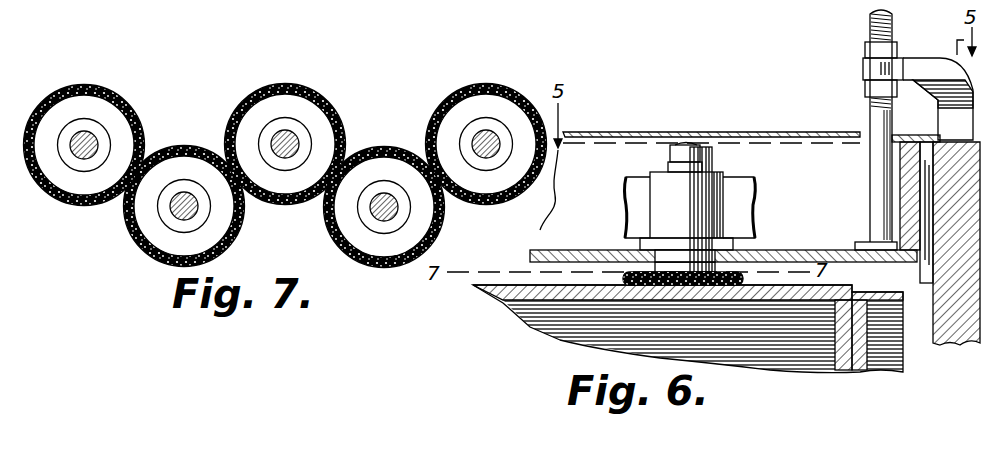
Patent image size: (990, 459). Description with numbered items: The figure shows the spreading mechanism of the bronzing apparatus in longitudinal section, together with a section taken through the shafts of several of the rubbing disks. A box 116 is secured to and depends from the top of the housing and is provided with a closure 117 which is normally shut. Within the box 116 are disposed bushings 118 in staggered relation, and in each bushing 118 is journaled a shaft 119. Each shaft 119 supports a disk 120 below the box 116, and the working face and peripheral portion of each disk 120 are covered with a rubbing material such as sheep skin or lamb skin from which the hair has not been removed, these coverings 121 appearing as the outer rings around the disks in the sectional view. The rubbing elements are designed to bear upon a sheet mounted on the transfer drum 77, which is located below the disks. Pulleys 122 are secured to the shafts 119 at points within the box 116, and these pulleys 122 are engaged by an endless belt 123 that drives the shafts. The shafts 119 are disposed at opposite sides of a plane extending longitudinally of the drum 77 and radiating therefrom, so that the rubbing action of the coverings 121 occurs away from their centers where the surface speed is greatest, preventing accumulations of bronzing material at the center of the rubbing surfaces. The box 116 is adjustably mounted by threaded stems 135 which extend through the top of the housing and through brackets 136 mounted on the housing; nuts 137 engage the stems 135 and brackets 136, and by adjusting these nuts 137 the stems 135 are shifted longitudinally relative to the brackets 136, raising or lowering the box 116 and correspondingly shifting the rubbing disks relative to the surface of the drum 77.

In FIG. 6, the transfer drum 77 is at (521, 322).
In FIG. 6, the box 116 is at (568, 249).
In FIG. 6, the closure 117 is at (628, 133).
In FIG. 6, the bushing 118 is at (728, 234).
In FIG. 7, the shaft 119 is at (184, 195).
In FIG. 6, the shaft 119 is at (693, 144).
In FIG. 7, the disk 120 is at (142, 222).
In FIG. 7, the covering 121 is at (93, 88).
In FIG. 6, the covering 121 is at (742, 276).
In FIG. 6, the pulley 122 is at (719, 173).
In FIG. 6, the endless belt 123 is at (752, 197).
In FIG. 6, the threaded stem 135 is at (870, 168).
In FIG. 6, the bracket 136 is at (920, 61).
In FIG. 6, the nut 137 is at (866, 44).